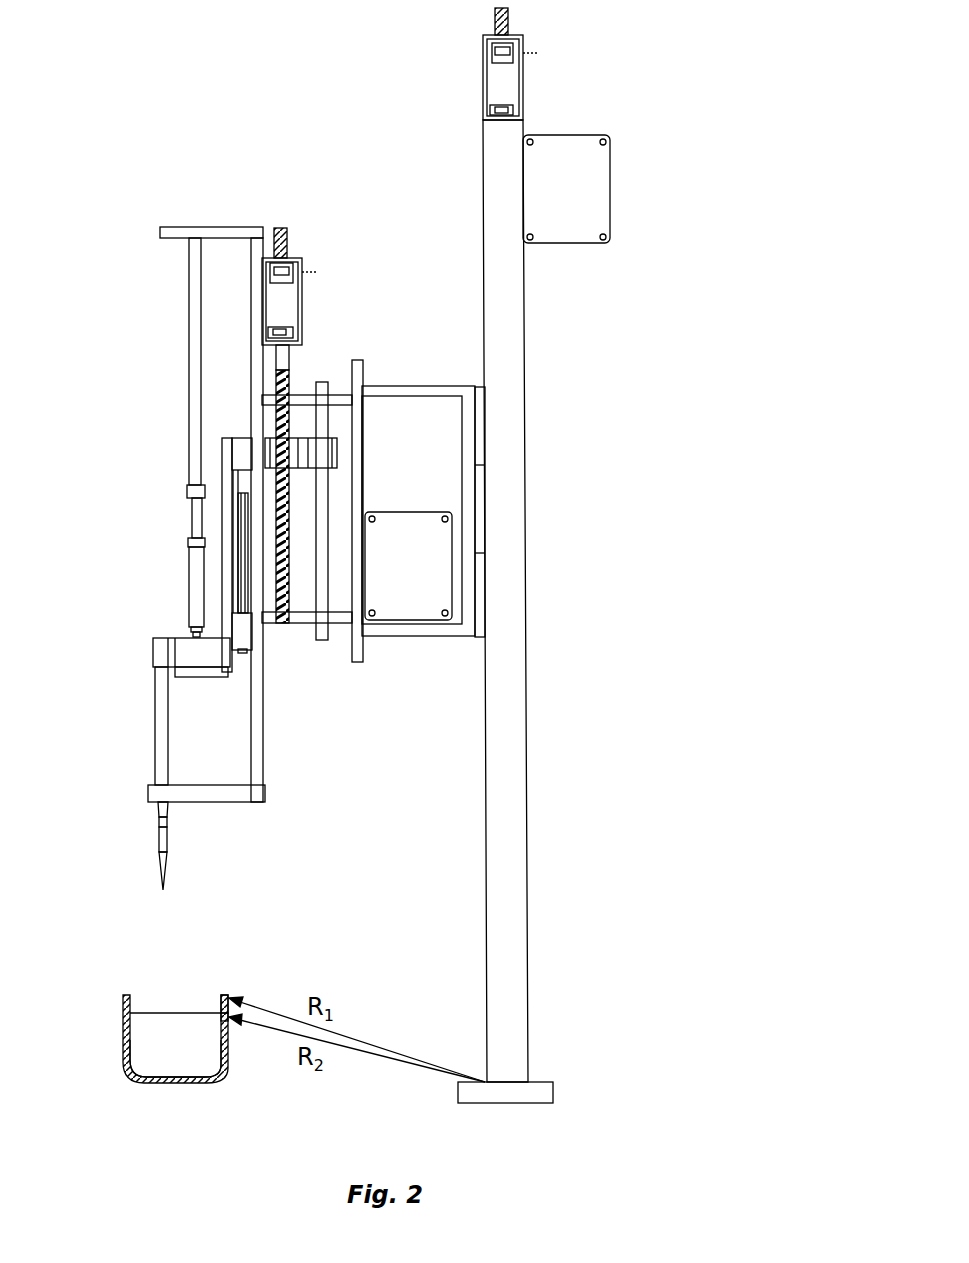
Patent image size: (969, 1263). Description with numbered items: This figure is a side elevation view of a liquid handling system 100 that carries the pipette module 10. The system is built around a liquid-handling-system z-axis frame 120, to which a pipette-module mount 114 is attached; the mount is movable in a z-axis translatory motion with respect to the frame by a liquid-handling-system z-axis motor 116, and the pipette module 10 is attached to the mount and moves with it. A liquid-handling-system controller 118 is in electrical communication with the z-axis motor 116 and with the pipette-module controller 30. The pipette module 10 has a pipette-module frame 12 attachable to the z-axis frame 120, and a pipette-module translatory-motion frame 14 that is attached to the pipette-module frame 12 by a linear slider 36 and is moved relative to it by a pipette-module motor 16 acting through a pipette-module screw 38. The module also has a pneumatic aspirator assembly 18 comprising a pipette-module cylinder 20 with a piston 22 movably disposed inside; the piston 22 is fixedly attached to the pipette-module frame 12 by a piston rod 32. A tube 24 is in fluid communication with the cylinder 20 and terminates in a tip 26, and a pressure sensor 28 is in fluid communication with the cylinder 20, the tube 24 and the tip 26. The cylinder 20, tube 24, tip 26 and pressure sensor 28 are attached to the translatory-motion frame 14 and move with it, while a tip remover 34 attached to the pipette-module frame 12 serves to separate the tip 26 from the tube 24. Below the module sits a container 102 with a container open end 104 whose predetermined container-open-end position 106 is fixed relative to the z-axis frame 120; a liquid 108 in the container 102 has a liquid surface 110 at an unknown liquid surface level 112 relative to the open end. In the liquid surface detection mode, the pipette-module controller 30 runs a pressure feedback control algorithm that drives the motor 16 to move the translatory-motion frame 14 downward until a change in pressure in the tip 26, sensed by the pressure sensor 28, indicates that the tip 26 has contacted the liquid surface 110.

The pipette module 10 is at (207, 208).
The pipette-module frame 12 is at (250, 227).
The pipette-module translatory-motion frame 14 is at (222, 455).
The pipette-module motor 16 is at (303, 258).
The pneumatic aspirator assembly 18 is at (155, 548).
The pipette-module cylinder 20 is at (192, 595).
The piston 22 is at (192, 503).
The tube 24 is at (155, 730).
The tip 26 is at (155, 835).
The pressure sensor 28 is at (195, 678).
The pipette-module controller 30 is at (390, 525).
The piston rod 32 is at (192, 390).
The tip remover 34 is at (150, 790).
The linear slider 36 is at (330, 492).
The pipette-module screw 38 is at (290, 373).
The liquid handling system 100 is at (693, 110).
The container 102 is at (123, 1038).
The container open end 104 is at (135, 975).
The container-open-end position 106 is at (228, 997).
The liquid 108 is at (147, 1053).
The liquid surface 110 is at (190, 1000).
The liquid surface level 112 is at (227, 1017).
The pipette-module mount 114 is at (475, 433).
The liquid-handling-system z-axis motor 116 is at (523, 83).
The liquid-handling-system controller 118 is at (610, 195).
The liquid-handling-system z-axis frame 120 is at (525, 713).